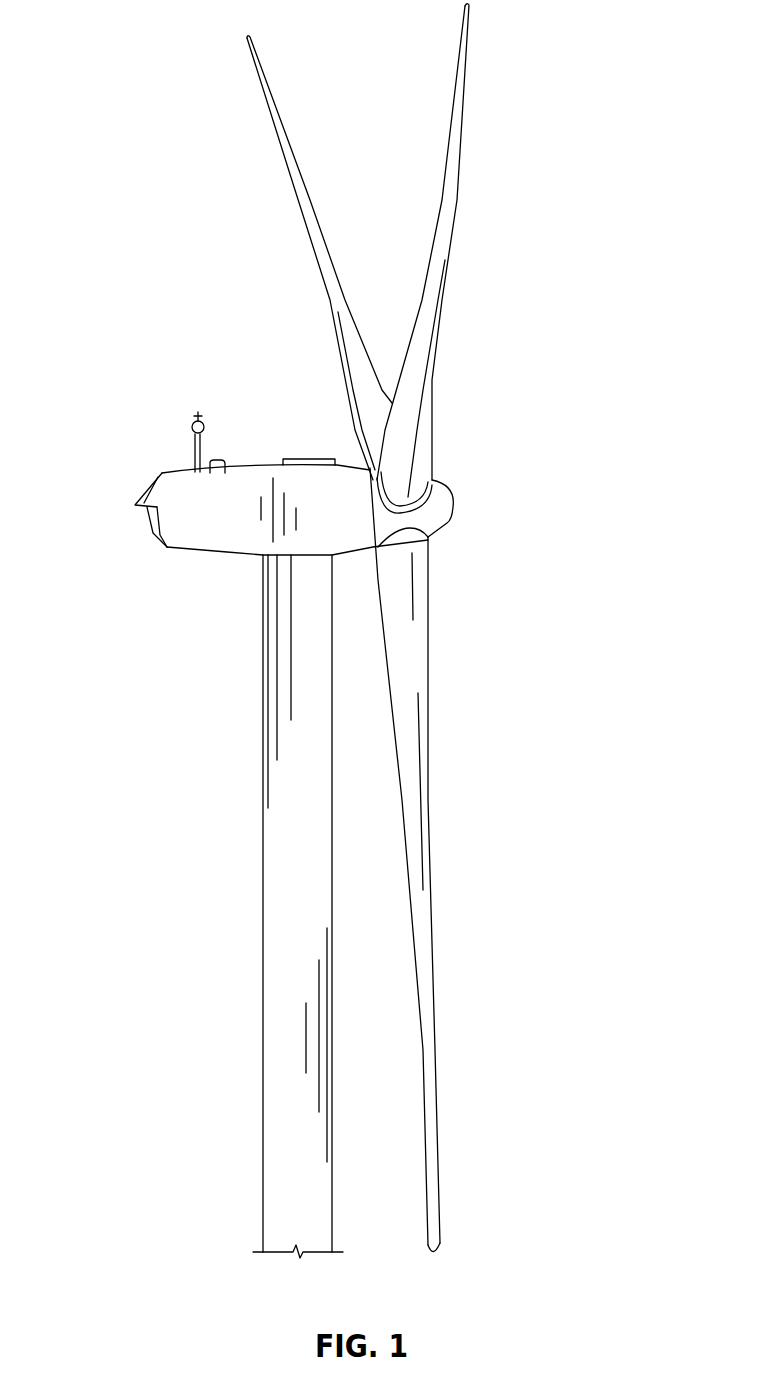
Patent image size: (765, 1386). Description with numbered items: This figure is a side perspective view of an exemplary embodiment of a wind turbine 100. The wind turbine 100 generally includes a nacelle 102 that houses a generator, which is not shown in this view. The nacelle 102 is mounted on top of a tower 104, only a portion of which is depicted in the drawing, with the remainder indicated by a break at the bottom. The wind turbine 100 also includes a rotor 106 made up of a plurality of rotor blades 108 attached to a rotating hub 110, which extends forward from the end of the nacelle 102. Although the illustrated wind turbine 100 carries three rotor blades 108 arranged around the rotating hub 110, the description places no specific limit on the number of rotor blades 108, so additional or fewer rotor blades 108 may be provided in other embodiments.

The wind turbine 100 is at (144, 61).
The nacelle 102 is at (215, 553).
The tower 104 is at (263, 862).
The rotor 106 is at (480, 238).
The rotor blades 108 is at (295, 147).
The rotating hub 110 is at (450, 520).